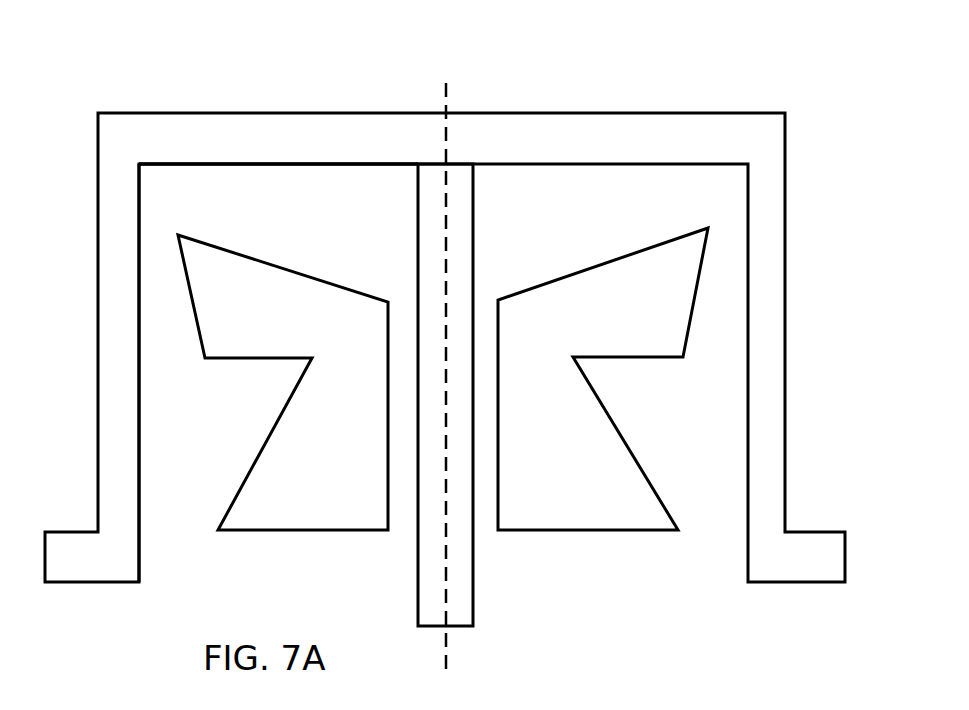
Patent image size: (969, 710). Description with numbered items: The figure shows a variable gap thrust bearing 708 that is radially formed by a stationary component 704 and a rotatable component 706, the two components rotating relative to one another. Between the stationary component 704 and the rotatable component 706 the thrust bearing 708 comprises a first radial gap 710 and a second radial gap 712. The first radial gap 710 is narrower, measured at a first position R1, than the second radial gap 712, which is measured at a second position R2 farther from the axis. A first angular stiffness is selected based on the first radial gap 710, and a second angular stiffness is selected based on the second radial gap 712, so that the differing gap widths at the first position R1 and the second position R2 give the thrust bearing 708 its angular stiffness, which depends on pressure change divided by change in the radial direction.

The stationary component 704 is at (597, 508).
The rotatable component 706 is at (185, 135).
The variable gap thrust bearing 708 is at (181, 186).
The first radial gap 710 is at (224, 182).
The second radial gap 712 is at (350, 183).
The first position R1 is at (228, 157).
The second position R2 is at (338, 162).